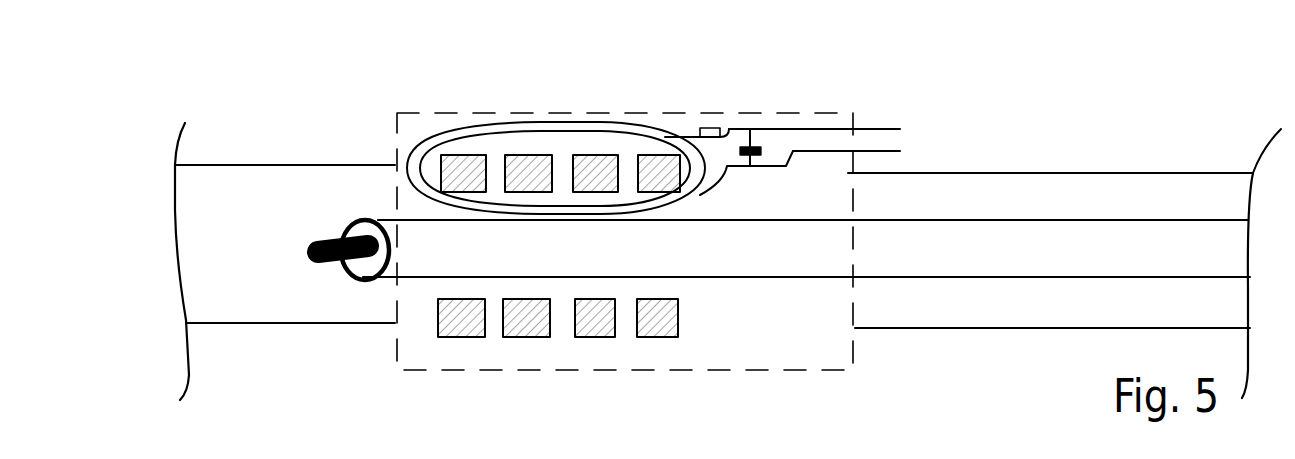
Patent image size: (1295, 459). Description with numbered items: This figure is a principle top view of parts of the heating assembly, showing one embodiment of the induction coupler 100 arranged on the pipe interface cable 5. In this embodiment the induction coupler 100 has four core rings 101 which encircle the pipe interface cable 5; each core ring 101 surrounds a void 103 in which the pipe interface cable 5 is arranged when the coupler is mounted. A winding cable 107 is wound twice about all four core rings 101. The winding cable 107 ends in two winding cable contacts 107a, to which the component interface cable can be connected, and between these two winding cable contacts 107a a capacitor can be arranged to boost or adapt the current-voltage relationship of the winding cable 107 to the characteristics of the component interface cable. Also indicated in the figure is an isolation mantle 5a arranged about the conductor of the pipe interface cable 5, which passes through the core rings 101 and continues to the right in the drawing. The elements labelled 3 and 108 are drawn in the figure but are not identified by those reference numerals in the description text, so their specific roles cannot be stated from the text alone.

The induction coupler 100 is at (380, 81).
The handle 3 is at (237, 183).
The pipe interface cable 5 is at (945, 235).
The isolation mantle 5a is at (346, 280).
The core ring 101 is at (462, 163).
The void 103 is at (456, 290).
The winding cable 107 is at (630, 125).
The winding cable contacts 107a is at (900, 130).
The connector 108 is at (754, 127).